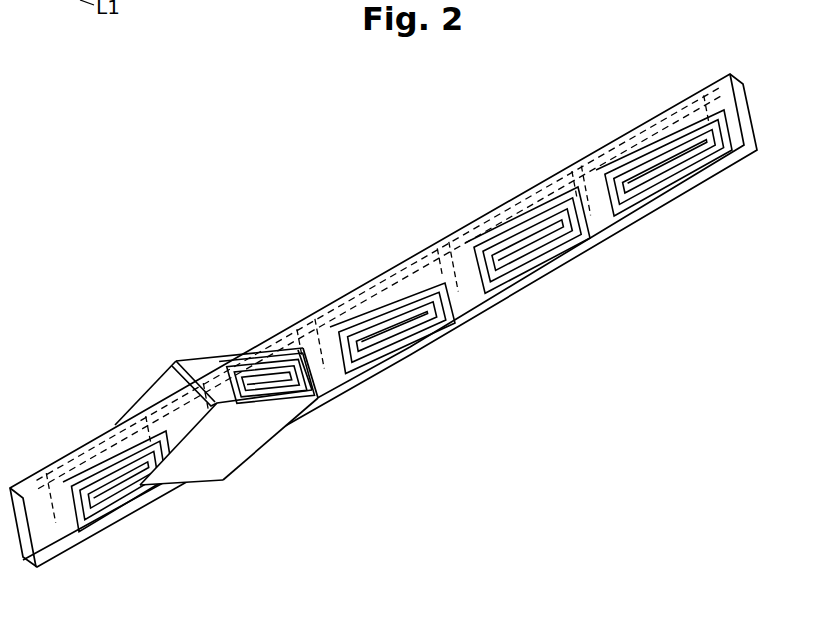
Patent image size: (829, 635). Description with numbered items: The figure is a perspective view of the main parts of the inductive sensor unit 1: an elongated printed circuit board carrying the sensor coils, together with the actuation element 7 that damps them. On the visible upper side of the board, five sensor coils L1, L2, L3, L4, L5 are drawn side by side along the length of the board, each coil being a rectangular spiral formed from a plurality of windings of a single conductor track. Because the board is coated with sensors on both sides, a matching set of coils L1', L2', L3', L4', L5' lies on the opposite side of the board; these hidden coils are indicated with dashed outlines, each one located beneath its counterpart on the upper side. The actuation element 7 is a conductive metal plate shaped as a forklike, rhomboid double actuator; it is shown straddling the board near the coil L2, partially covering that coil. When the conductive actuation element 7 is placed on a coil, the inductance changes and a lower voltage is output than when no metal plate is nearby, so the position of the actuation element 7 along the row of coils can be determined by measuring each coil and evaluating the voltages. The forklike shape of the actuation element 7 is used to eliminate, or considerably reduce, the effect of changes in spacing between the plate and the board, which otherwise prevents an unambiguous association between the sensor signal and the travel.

The inductive sensor unit 1 is at (396, 211).
The actuation element 7 is at (250, 437).
The sensor coil L1 is at (124, 505).
The sensor coil L2 is at (307, 406).
The sensor coil L3 is at (416, 345).
The sensor coil L4 is at (538, 262).
The sensor coil L5 is at (666, 189).
The sensor coil on opposite side L1' is at (83, 445).
The sensor coil on opposite side L2' is at (252, 347).
The sensor coil on opposite side L3' is at (363, 288).
The sensor coil on opposite side L4' is at (513, 194).
The sensor coil on opposite side L5' is at (644, 117).